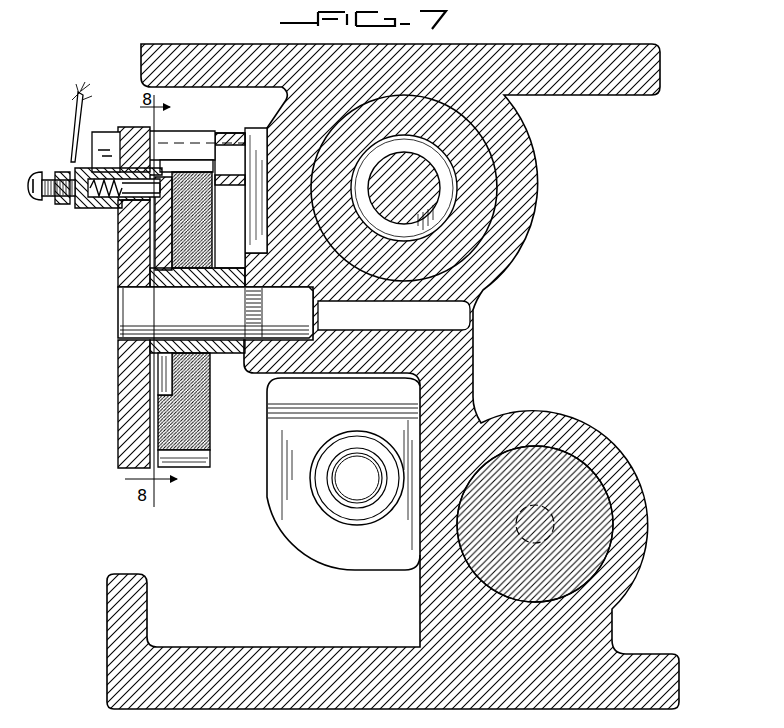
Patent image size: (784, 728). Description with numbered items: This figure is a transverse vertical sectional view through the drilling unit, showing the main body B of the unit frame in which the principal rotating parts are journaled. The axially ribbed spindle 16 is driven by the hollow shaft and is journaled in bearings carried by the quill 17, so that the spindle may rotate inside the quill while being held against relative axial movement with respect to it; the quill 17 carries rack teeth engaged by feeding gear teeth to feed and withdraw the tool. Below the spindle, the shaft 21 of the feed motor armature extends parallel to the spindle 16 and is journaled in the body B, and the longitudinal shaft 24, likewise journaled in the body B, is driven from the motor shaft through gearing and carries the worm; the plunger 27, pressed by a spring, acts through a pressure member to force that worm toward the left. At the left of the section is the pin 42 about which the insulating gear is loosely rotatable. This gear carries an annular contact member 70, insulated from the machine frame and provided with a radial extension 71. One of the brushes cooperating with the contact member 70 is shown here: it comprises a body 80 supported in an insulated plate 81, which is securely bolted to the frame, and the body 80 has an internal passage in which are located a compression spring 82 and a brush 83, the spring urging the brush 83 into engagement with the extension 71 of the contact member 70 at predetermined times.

The main body B is at (527, 198).
The spindle 16 is at (425, 181).
The quill 17 is at (462, 144).
The shaft 21 is at (327, 508).
The longitudinal shaft 24 is at (545, 522).
The plunger 27 is at (582, 474).
The pin 42 is at (127, 304).
The contact member 70 is at (160, 385).
The radial extension 71 is at (172, 201).
The body 80 is at (110, 208).
The insulated plate 81 is at (127, 268).
The compression spring 82 is at (83, 205).
The brush 83 is at (121, 230).